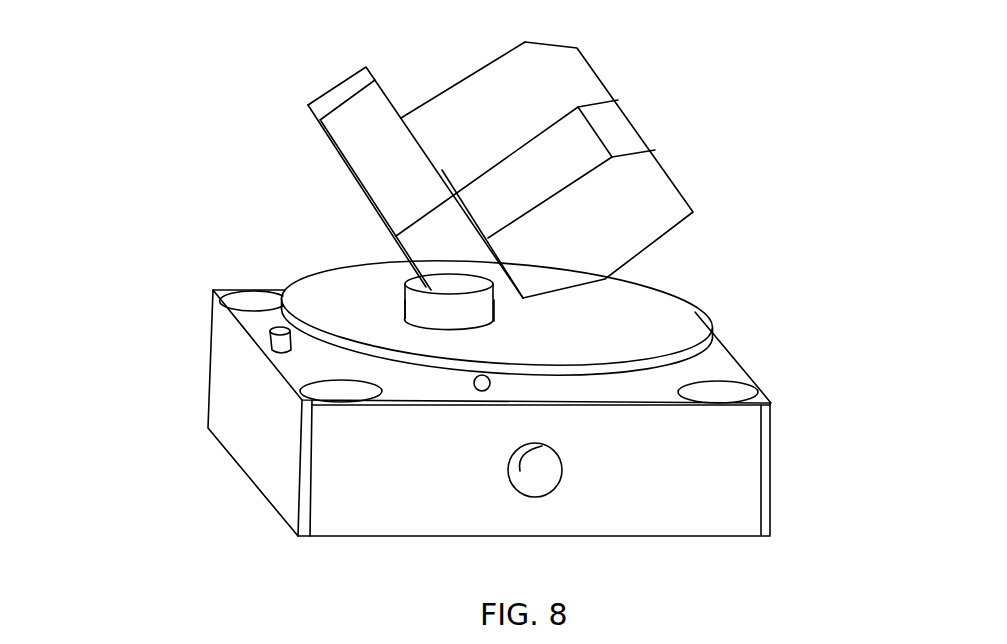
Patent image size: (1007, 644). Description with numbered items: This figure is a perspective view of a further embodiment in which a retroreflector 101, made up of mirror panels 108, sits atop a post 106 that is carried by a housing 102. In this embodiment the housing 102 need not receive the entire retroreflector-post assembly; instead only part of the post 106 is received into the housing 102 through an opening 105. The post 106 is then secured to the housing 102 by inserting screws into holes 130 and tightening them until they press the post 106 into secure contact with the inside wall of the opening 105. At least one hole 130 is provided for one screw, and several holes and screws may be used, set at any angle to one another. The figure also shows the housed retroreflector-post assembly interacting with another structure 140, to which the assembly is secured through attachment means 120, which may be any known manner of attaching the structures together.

The retroreflector 101 is at (667, 165).
The housing 102 is at (623, 330).
The opening 105 is at (447, 308).
The post 106 is at (447, 304).
The mirror panels 108 is at (525, 62).
The attachment means 120 is at (540, 465).
The holes 130 is at (272, 332).
The another structure 140 is at (770, 458).